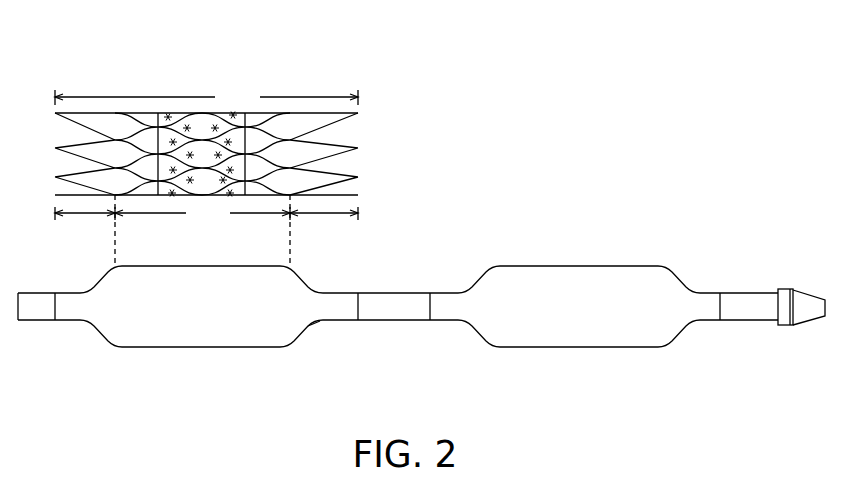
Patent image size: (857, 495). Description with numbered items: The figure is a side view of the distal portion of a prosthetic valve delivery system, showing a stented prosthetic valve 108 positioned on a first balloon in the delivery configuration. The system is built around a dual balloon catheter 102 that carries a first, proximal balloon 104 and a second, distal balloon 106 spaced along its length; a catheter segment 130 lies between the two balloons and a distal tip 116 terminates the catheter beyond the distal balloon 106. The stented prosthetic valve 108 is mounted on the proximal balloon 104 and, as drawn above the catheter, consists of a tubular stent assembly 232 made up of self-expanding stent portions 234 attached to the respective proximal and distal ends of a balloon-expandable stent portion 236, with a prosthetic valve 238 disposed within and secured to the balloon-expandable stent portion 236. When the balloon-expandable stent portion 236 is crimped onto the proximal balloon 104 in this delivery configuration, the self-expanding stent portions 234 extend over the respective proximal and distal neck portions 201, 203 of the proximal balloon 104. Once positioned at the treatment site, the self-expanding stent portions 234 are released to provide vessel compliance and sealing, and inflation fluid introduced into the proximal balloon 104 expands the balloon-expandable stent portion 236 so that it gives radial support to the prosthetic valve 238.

The dual balloon catheter 102 is at (426, 290).
The proximal balloon 104 is at (195, 348).
The distal balloon 106 is at (557, 350).
The stented prosthetic valve 108 is at (305, 78).
The distal tip 116 is at (800, 300).
The intermediate catheter segment 130 is at (387, 293).
The proximal neck portion 201 is at (80, 322).
The distal neck portion 203 is at (323, 320).
The tubular stent assembly 232 is at (206, 98).
The self-expanding stent portions 234 is at (82, 215).
The balloon-expandable stent portion 236 is at (202, 214).
The prosthetic valve 238 is at (188, 150).